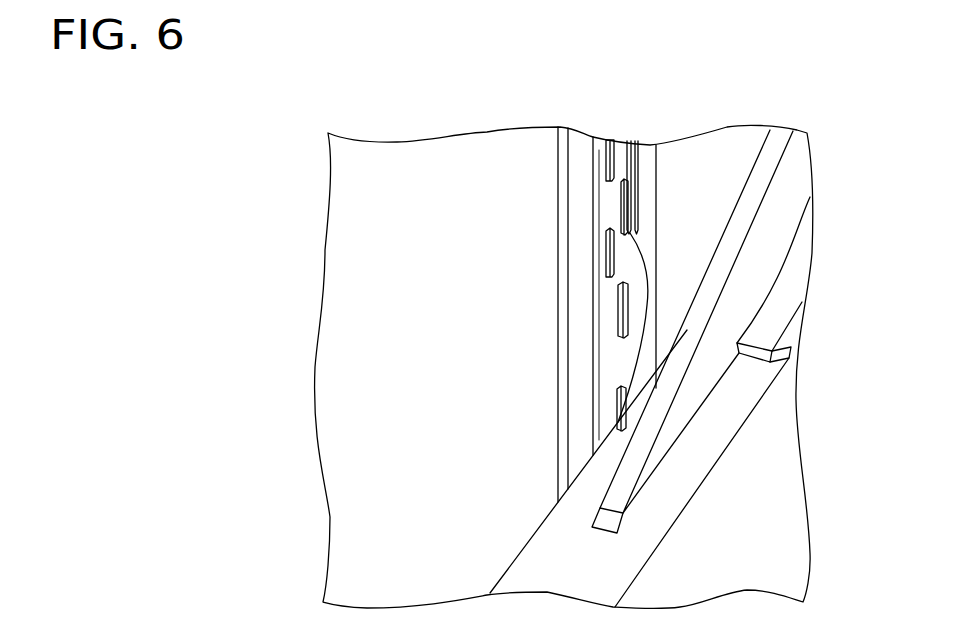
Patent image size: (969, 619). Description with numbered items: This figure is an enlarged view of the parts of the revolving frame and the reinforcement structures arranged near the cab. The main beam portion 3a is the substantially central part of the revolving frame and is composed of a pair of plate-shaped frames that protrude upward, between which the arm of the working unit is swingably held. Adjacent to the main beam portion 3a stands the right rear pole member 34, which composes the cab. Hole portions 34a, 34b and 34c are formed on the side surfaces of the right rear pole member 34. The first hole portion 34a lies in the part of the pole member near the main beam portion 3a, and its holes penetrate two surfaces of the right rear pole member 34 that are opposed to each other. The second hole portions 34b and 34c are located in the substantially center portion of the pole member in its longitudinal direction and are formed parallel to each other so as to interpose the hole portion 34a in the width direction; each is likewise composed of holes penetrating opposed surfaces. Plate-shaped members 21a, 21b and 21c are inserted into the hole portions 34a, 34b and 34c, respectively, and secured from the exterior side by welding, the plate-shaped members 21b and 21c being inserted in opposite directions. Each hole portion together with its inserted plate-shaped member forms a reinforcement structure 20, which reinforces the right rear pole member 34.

The right rear pole member 34 is at (582, 146).
The hole portion 34a is at (602, 205).
The hole portion 34b is at (596, 165).
The hole portion 34c is at (616, 149).
The reinforcement structure 20 is at (658, 162).
The plate-shaped member 21a is at (650, 290).
The plate-shaped member 21b is at (641, 200).
The plate-shaped member 21c is at (634, 192).
The main beam portion 3a is at (743, 397).